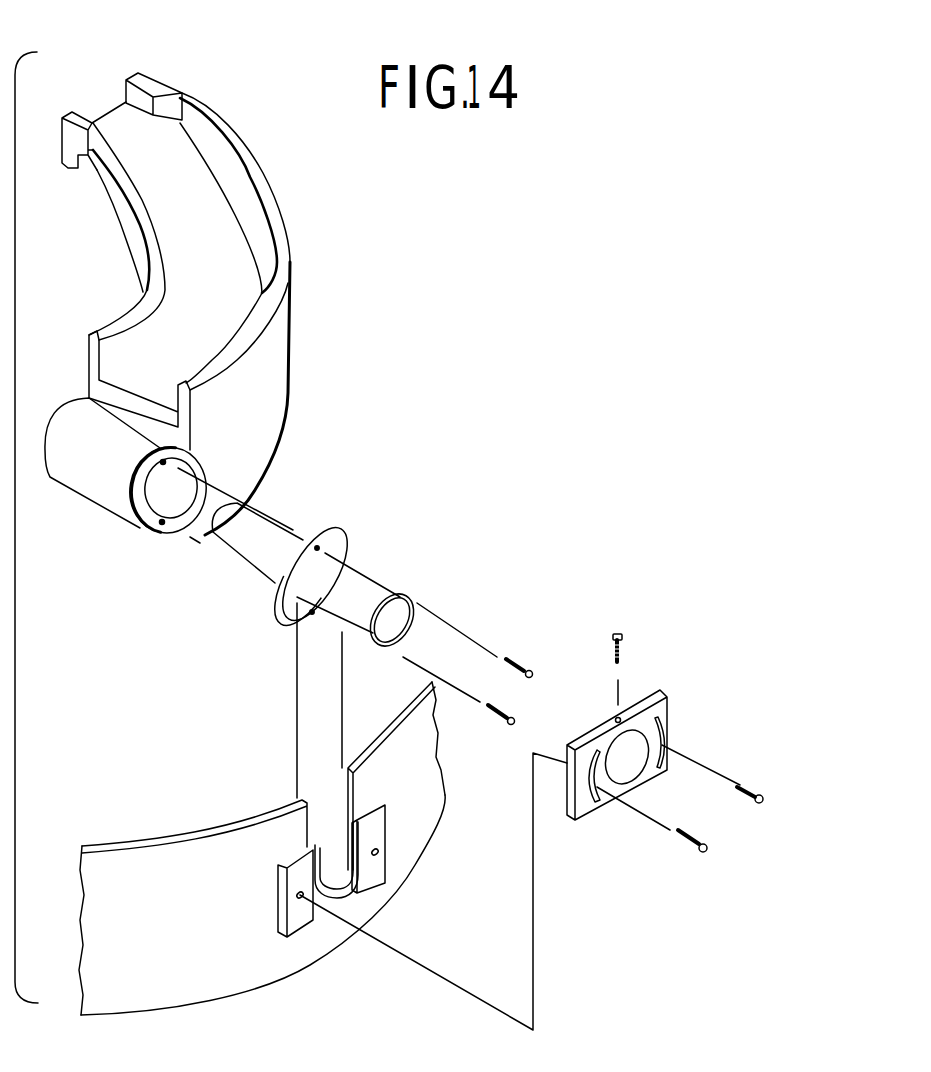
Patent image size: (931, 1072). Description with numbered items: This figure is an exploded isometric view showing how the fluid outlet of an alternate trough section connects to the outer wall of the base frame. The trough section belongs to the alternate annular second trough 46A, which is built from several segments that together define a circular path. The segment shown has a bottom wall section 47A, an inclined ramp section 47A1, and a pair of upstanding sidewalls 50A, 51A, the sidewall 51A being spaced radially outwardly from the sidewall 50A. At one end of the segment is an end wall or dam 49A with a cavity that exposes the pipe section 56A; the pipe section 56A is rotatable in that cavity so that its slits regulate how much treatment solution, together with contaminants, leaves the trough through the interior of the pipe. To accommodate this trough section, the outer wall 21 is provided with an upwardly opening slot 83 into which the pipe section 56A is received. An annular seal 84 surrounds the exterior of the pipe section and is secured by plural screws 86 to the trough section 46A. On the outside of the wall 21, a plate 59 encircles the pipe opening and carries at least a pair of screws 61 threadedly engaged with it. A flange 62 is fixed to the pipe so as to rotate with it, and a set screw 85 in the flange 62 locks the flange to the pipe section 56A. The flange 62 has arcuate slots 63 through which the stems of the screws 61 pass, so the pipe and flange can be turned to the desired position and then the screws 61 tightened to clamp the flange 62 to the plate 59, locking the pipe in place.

The annular second trough 46A is at (293, 266).
The inclined ramp section 47A1 is at (197, 177).
The bottom wall section 47A is at (177, 372).
The sidewall 50A is at (117, 200).
The sidewall 51A is at (270, 357).
The end wall or dam 49A is at (104, 397).
The pipe section 56A is at (357, 587).
The annular seal 84 is at (336, 530).
The upwardly opening slot 83 is at (312, 822).
The screws 86 is at (520, 660).
The set screw 85 is at (622, 634).
The flange 62 is at (668, 712).
The arcuate slots 63 is at (663, 737).
The screws 61 is at (684, 824).
The plate 59 is at (280, 910).
The wall 21 is at (220, 975).